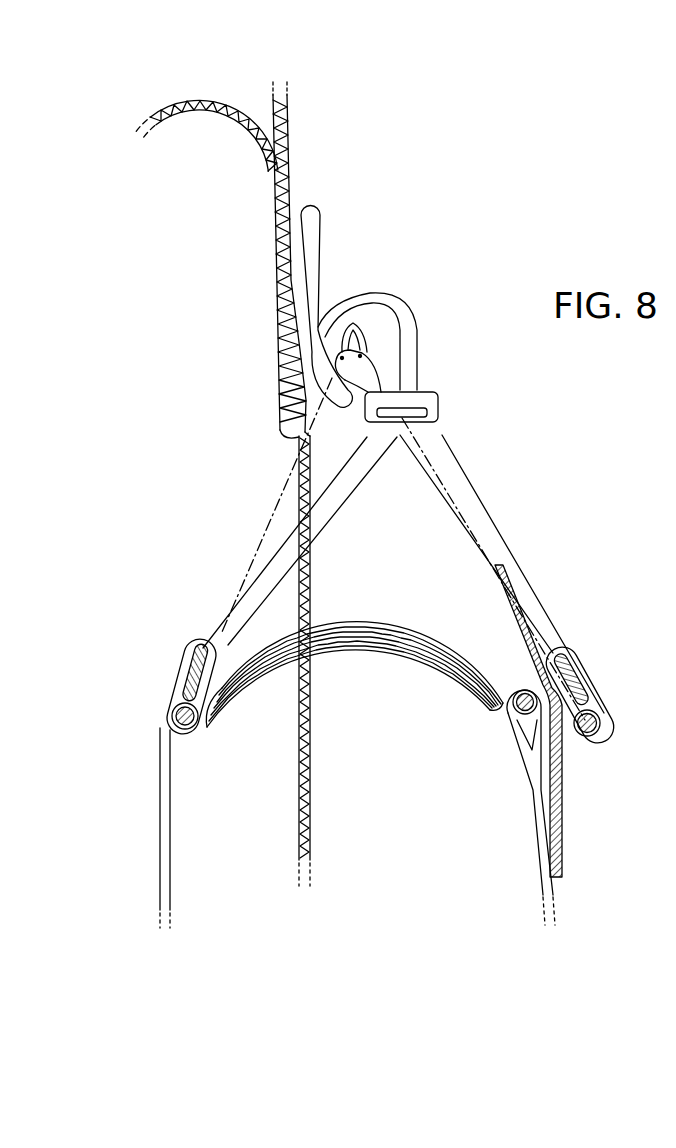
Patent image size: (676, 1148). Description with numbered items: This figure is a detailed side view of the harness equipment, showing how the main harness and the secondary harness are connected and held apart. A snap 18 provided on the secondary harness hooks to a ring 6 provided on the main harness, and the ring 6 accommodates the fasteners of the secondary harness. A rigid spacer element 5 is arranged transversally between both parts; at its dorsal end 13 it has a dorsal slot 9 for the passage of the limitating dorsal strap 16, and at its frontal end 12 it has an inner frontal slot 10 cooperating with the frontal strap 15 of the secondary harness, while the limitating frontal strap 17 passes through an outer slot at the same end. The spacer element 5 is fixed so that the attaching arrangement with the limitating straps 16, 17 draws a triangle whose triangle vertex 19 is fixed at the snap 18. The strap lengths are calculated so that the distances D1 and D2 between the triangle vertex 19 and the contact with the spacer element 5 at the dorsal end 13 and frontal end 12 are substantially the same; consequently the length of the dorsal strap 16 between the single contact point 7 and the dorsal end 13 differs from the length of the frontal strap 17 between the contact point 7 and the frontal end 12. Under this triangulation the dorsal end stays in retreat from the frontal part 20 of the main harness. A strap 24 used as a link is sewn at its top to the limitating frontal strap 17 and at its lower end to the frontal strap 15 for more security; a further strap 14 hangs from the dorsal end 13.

The spacer element 5 is at (348, 646).
The ring 6 is at (307, 232).
The single contact point 7 is at (440, 395).
The dorsal slot 9 is at (200, 733).
The inner frontal slot 10 is at (510, 725).
The frontal end 12 is at (605, 720).
The dorsal end 13 is at (170, 728).
The strap 14 is at (165, 858).
The frontal strap 15 is at (538, 783).
The limitating dorsal strap 16 is at (230, 643).
The limitating frontal strap 17 is at (578, 664).
The snap 18 is at (406, 331).
The triangle vertex 19 is at (365, 322).
The frontal part of the main harness 20 is at (312, 774).
The link strap 24 is at (558, 813).
The distance D1 is at (265, 529).
The distance D2 is at (455, 492).